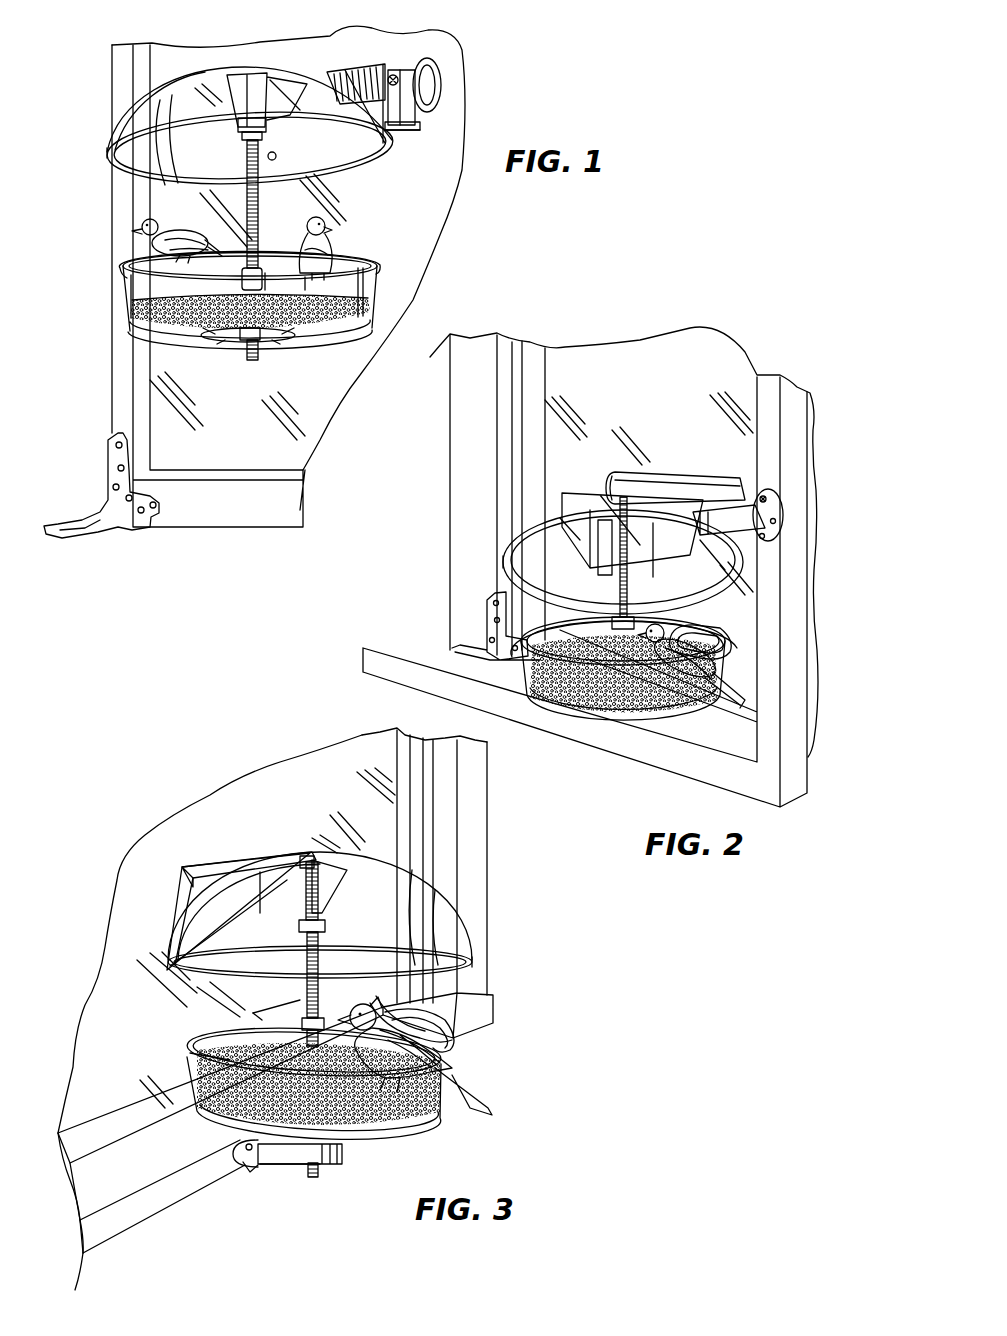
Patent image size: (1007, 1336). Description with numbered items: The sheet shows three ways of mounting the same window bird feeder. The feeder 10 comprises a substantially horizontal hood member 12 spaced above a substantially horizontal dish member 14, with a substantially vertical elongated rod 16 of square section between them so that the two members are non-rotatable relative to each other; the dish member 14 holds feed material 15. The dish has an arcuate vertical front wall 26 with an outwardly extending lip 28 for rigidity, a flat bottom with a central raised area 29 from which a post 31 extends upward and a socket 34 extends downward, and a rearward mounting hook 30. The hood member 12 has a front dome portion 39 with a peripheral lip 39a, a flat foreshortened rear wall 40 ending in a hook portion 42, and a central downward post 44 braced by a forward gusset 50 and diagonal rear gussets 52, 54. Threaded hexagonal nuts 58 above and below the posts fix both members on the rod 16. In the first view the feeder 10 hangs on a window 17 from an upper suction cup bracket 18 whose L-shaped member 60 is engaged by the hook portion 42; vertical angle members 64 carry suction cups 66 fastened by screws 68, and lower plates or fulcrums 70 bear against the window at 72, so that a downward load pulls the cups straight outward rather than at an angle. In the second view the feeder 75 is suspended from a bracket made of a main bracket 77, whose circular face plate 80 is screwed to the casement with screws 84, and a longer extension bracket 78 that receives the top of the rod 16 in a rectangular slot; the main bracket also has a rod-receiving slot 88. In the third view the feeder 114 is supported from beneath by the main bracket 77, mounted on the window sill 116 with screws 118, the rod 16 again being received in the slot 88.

In FIG. 1, the window bird feeder 10 is at (452, 216).
In FIG. 1, the hood member 12 is at (203, 73).
In FIG. 2, the hood member 12 is at (750, 567).
In FIG. 3, the hood member 12 is at (438, 905).
In FIG. 1, the dish member 14 is at (125, 296).
In FIG. 2, the dish member 14 is at (658, 712).
In FIG. 3, the dish member 14 is at (398, 1126).
In FIG. 1, the feed material 15 is at (343, 275).
In FIG. 2, the feed material 15 is at (610, 663).
In FIG. 3, the feed material 15 is at (197, 1127).
In FIG. 1, the elongated rod 16 is at (259, 190).
In FIG. 2, the elongated rod 16 is at (640, 615).
In FIG. 3, the elongated rod 16 is at (306, 997).
In FIG. 1, the window 17 is at (248, 452).
In FIG. 2, the window 17 is at (658, 362).
In FIG. 3, the window 17 is at (273, 807).
In FIG. 1, the upper suction cup bracket 18 is at (388, 67).
In FIG. 3, the front wall 26 is at (433, 1097).
In FIG. 1, the lip 28 is at (387, 263).
In FIG. 2, the lip 28 is at (525, 655).
In FIG. 3, the lip 28 is at (453, 1050).
In FIG. 1, the raised area 29 is at (285, 347).
In FIG. 1, the dish member mounting hook 30 is at (257, 280).
In FIG. 3, the dish member mounting hook 30 is at (160, 1047).
In FIG. 3, the post 31 is at (253, 1013).
In FIG. 1, the socket 34 is at (263, 350).
In FIG. 1, the front dome portion 39 is at (285, 74).
In FIG. 2, the front dome portion 39 is at (533, 573).
In FIG. 3, the front dome portion 39 is at (433, 933).
In FIG. 1, the peripheral lip 39a is at (107, 152).
In FIG. 2, the peripheral lip 39a is at (500, 583).
In FIG. 3, the peripheral lip 39a is at (480, 953).
In FIG. 1, the rear wall 40 is at (353, 68).
In FIG. 3, the rear wall 40 is at (200, 897).
In FIG. 2, the hook portion 42 is at (590, 507).
In FIG. 3, the hook portion 42 is at (175, 875).
In FIG. 1, the post 44 is at (240, 128).
In FIG. 3, the post 44 is at (305, 916).
In FIG. 3, the forwardly extending gusset 50 is at (345, 877).
In FIG. 2, the diagonally rearwardly extending gusset 52 is at (603, 537).
In FIG. 3, the diagonally rearwardly extending gusset 52 is at (287, 880).
In FIG. 2, the diagonally rearwardly extending gusset 54 is at (643, 532).
In FIG. 1, the threaded hexagonal nuts 58 is at (238, 140).
In FIG. 2, the threaded hexagonal nuts 58 is at (612, 617).
In FIG. 3, the threaded hexagonal nuts 58 is at (273, 1040).
In FIG. 1, the L-shaped member 60 is at (372, 75).
In FIG. 1, the vertical angle members 64 is at (415, 100).
In FIG. 1, the suction cups 66 is at (434, 82).
In FIG. 1, the screws 68 is at (398, 78).
In FIG. 1, the plates or fulcrums 70 is at (396, 132).
In FIG. 1, the fulcrum contact point 72 is at (420, 126).
In FIG. 2, the bird feeder 75 is at (482, 606).
In FIG. 2, the main bracket 77 is at (755, 521).
In FIG. 3, the main bracket 77 is at (295, 1156).
In FIG. 2, the extension bracket 78 is at (657, 493).
In FIG. 2, the face plate 80 is at (780, 513).
In FIG. 3, the face plate 80 is at (255, 1162).
In FIG. 2, the screws 84 is at (764, 494).
In FIG. 3, the slot 88 is at (343, 1156).
In FIG. 3, the feeder 114 is at (516, 1002).
In FIG. 3, the sill 116 is at (105, 1185).
In FIG. 3, the screws 118 is at (247, 1153).